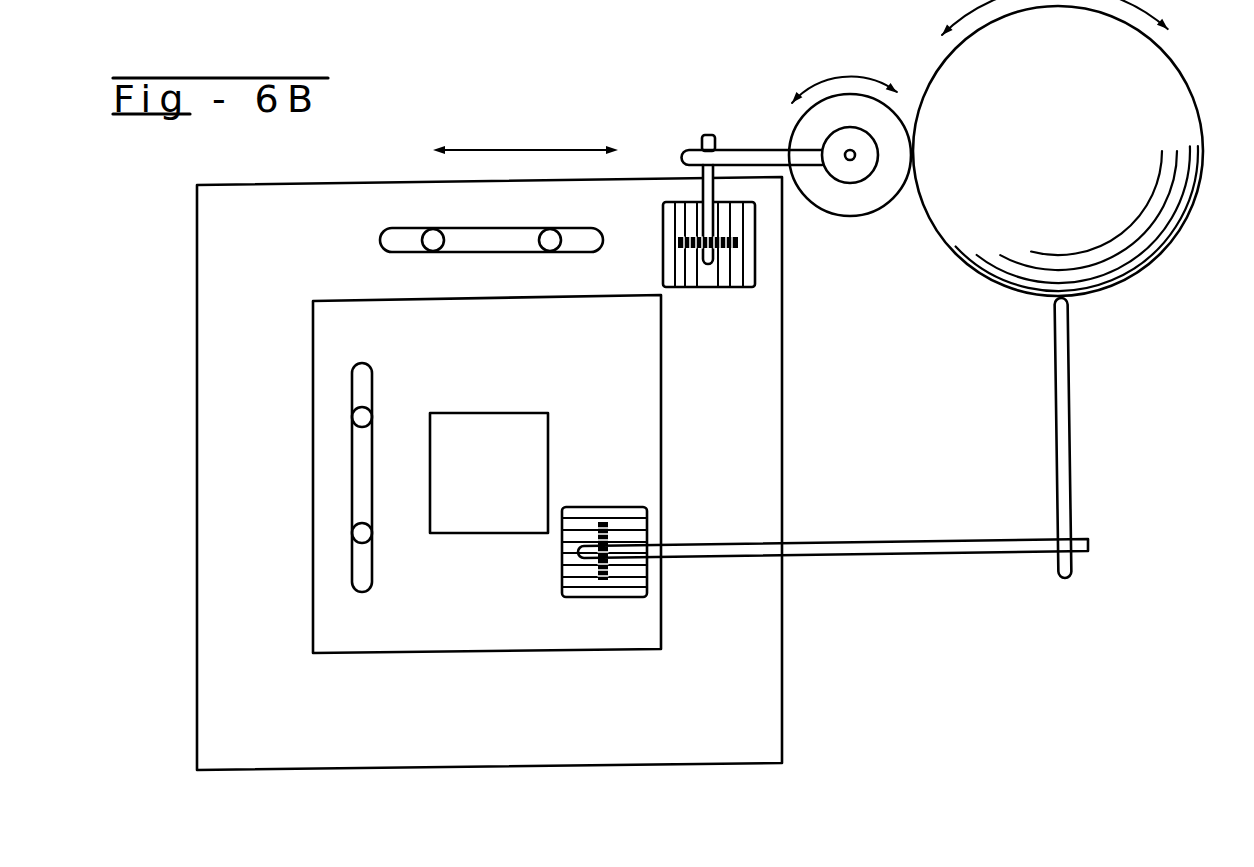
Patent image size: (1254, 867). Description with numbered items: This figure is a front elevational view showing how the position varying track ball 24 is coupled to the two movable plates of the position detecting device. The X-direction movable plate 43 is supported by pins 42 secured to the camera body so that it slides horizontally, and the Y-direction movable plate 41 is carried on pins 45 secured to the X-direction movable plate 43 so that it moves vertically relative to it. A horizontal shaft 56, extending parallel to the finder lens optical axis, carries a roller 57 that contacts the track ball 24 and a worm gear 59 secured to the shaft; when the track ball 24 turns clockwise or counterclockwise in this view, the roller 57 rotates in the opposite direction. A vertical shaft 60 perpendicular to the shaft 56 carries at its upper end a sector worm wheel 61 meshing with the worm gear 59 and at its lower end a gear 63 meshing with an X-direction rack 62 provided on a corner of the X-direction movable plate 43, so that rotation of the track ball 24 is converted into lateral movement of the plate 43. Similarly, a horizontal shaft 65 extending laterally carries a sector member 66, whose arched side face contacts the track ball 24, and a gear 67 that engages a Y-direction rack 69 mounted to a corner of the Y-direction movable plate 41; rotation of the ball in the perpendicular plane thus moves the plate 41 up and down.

The object distance measuring position varying track ball 24 is at (1172, 88).
The Y-direction movable plate 41 is at (650, 410).
The pins 42 is at (432, 245).
The X-direction movable plate 43 is at (770, 742).
The pins 45 is at (353, 420).
The horizontal shaft 56 is at (853, 150).
The roller 57 is at (800, 127).
The worm gear 59 is at (862, 178).
The vertical shaft 60 is at (706, 135).
The sector worm wheel 61 is at (748, 147).
The X-direction rack 62 is at (755, 280).
The gear 63 is at (738, 242).
The horizontal shaft 65 is at (920, 560).
The sector member 66 is at (1070, 428).
The gear 67 is at (600, 520).
The Y-direction rack 69 is at (647, 590).